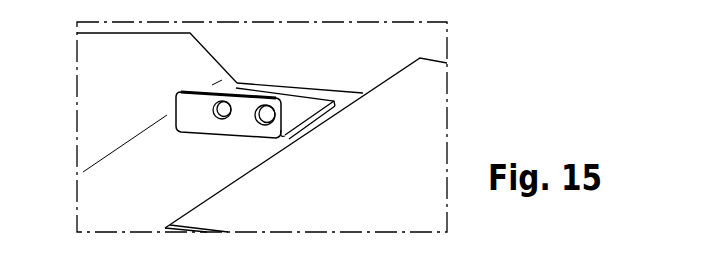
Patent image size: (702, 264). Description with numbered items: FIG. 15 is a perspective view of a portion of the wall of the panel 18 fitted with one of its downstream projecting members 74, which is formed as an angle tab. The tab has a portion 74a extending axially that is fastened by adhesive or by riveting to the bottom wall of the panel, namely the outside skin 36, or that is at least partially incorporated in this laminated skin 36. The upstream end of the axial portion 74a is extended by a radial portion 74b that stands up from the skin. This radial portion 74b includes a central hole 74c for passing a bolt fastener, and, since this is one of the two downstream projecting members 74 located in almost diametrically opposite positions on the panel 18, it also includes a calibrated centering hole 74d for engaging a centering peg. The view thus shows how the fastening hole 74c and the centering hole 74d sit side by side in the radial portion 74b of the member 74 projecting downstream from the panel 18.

The panel 18 is at (417, 145).
The outside skin 36 is at (122, 183).
The downstream projecting member 74 is at (192, 123).
The axially extending portion 74a is at (298, 107).
The radial portion 74b is at (187, 111).
The central hole 74c is at (231, 106).
The calibrated centering hole 74d is at (263, 119).